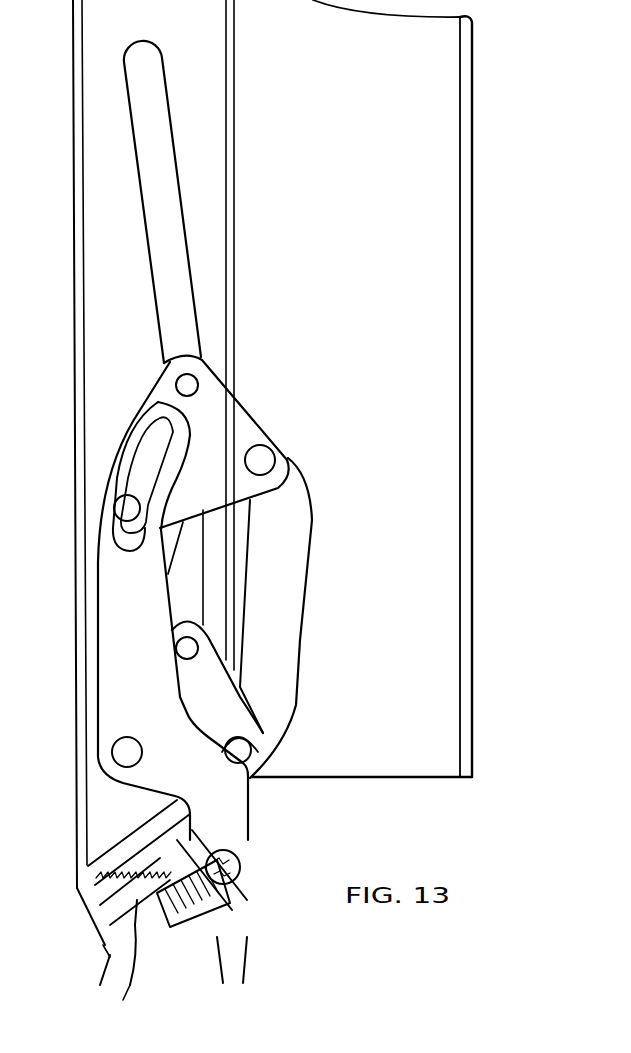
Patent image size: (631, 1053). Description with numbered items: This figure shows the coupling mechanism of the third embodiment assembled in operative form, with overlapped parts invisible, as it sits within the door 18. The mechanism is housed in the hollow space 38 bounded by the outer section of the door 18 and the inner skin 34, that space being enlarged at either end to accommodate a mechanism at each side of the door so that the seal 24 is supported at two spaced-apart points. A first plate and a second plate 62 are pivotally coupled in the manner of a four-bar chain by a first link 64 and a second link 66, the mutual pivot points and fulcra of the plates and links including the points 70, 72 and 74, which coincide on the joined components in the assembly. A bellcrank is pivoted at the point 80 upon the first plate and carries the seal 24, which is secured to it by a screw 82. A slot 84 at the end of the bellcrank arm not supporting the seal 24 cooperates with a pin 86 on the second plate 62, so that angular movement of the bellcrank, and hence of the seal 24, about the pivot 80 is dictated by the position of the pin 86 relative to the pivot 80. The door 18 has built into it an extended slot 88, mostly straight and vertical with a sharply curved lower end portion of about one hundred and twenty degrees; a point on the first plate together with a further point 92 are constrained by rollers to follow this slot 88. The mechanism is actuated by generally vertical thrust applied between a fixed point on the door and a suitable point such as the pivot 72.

The door 18 is at (80, 329).
The seal 24 is at (108, 953).
The inner skin 34 is at (471, 412).
The hollow space 38 is at (403, 521).
The second plate 62 is at (242, 413).
The first link 64 is at (178, 558).
The second link 66 is at (303, 598).
The pivot point 70 is at (179, 377).
The pivot 72 is at (260, 736).
The pivot point 74 is at (266, 455).
The pivot 80 is at (132, 739).
The screw 82 is at (172, 930).
The slot 84 is at (137, 445).
The pin 86 is at (120, 507).
The extended slot 88 is at (150, 257).
The further point 92 is at (177, 652).